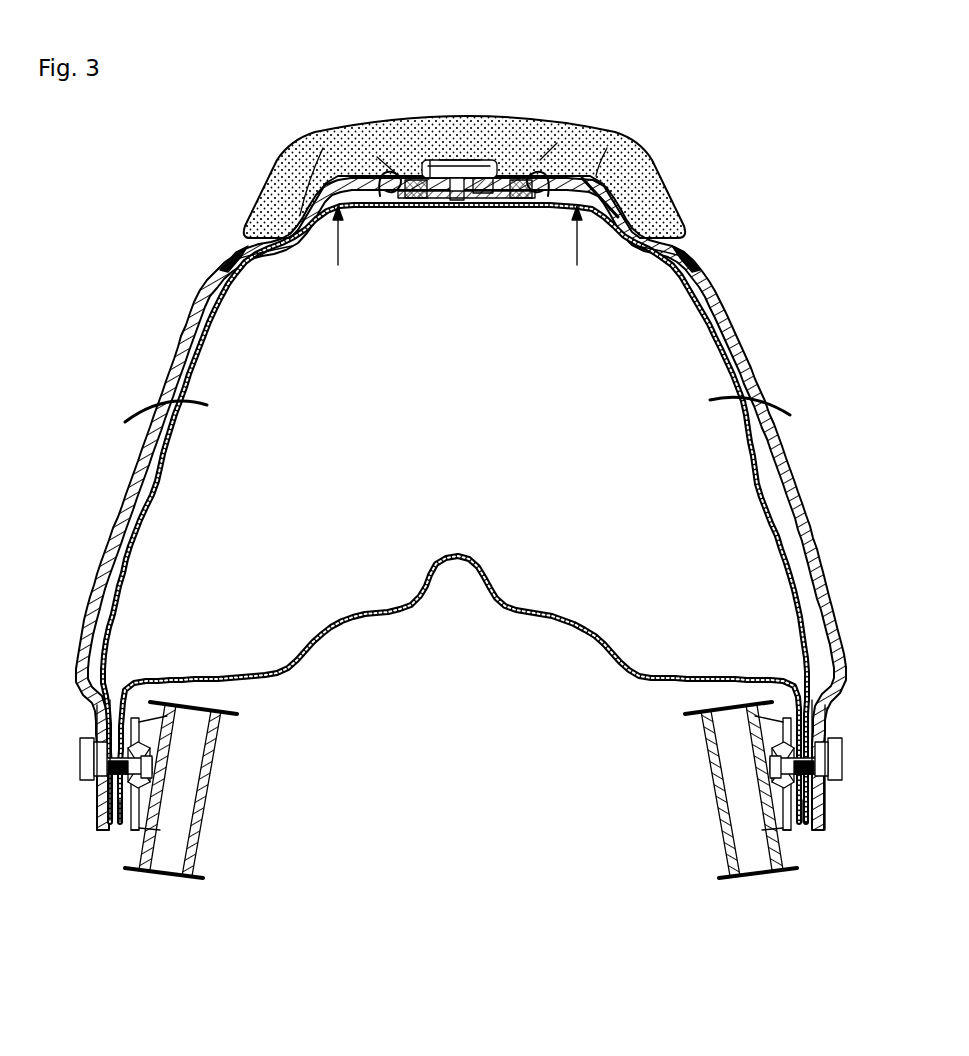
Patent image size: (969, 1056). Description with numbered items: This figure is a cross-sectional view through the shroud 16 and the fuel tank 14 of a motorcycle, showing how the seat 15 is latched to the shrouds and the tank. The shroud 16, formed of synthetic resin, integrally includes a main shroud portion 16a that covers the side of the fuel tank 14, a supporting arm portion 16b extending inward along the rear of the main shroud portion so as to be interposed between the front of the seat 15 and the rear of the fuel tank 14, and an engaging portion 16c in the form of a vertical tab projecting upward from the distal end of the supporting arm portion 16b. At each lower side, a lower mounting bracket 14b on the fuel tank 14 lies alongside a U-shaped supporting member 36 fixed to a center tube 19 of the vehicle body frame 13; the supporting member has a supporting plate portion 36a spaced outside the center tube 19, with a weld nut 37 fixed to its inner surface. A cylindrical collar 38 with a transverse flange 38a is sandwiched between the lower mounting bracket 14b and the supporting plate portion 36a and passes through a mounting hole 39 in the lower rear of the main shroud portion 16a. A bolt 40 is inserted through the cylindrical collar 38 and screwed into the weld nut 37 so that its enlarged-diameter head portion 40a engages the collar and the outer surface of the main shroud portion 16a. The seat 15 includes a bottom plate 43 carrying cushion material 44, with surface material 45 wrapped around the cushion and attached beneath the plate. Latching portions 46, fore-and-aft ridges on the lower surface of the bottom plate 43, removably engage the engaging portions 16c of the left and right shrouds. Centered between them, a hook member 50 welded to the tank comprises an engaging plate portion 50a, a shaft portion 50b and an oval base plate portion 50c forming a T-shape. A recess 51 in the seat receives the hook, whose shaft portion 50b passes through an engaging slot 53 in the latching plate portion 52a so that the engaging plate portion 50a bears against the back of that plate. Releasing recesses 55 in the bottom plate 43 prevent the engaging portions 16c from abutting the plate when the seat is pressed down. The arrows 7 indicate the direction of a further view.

The direction arrow 7 is at (452, 249).
The vehicle body frame 13 is at (202, 846).
The fuel tank 14 is at (303, 656).
The lower mounting bracket 14b is at (100, 828).
The seat 15 is at (497, 108).
The shroud 16 is at (183, 332).
The main shroud portion 16a is at (172, 385).
The supporting arm portion 16b is at (285, 222).
The engaging portion 16c is at (377, 157).
The center tube 19 is at (197, 810).
The supporting member 36 is at (150, 705).
The supporting plate portion 36a is at (117, 832).
The weld nut 37 is at (150, 753).
The cylindrical collar 38 is at (103, 742).
The transverse flange 38a is at (122, 722).
The mounting hole 39 is at (92, 772).
The bolt 40 is at (160, 777).
The enlarged-diameter head portion 40a is at (90, 753).
The bottom plate 43 is at (313, 143).
The cushion material 44 is at (613, 140).
The surface material 45 is at (447, 160).
The latching portion 46 is at (385, 205).
The hook member 50 is at (492, 165).
The engaging plate portion 50a is at (470, 160).
The shaft portion 50b is at (427, 200).
The base plate portion 50c is at (500, 172).
The recess 51 is at (436, 160).
The latching plate portion 52a is at (490, 199).
The engaging slot 53 is at (457, 200).
The releasing recess 55 is at (400, 207).